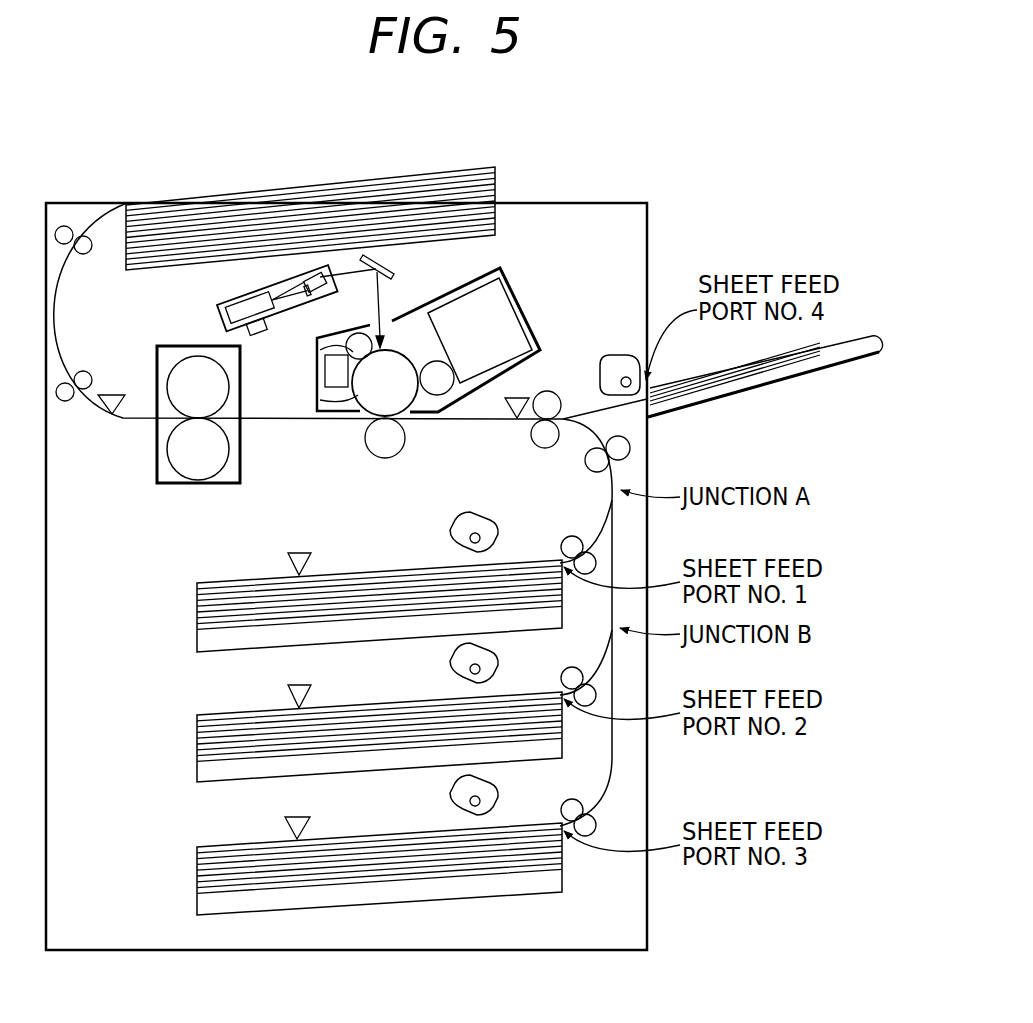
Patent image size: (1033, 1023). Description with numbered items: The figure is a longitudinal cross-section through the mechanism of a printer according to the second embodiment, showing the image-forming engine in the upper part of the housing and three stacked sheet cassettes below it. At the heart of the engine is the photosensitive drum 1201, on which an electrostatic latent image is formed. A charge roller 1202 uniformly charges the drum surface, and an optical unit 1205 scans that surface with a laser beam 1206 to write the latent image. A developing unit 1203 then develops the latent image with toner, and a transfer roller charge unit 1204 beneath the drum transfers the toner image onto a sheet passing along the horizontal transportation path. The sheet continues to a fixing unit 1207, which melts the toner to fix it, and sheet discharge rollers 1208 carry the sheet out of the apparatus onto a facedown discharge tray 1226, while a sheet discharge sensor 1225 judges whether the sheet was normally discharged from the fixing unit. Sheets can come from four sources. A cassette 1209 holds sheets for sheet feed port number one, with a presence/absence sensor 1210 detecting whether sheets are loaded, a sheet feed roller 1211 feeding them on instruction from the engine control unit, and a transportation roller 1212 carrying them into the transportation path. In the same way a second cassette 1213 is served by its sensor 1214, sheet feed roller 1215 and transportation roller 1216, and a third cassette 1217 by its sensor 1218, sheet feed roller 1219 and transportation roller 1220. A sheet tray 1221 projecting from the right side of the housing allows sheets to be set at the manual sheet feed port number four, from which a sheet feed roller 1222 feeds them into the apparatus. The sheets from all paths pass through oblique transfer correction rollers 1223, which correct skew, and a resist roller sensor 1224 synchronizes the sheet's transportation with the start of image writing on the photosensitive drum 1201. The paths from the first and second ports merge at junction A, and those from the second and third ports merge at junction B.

The photosensitive drum 1201 is at (350, 396).
The charge roller 1202 is at (317, 355).
The developing unit 1203 is at (517, 297).
The transfer roller charge unit 1204 is at (385, 458).
The optical unit 1205 is at (222, 302).
The laser beam 1206 is at (382, 305).
The fixing unit 1207 is at (160, 485).
The sheet discharge rollers 1208 is at (88, 255).
The cassette (No. 1) 1209 is at (197, 645).
The cassette No. 1 sheet presence/absence sensor 1210 is at (288, 558).
The sheet feed roller (No. 1) 1211 is at (450, 530).
The transportation roller (No. 1) 1212 is at (582, 522).
The cassette (No. 2) 1213 is at (197, 778).
The cassette No. 2 sheet presence/absence sensor 1214 is at (288, 690).
The sheet feed roller (No. 2) 1215 is at (450, 662).
The transportation roller (No. 2) 1216 is at (574, 668).
The cassette (No. 3) 1217 is at (197, 905).
The cassette No. 3 sheet presence/absence sensor 1218 is at (286, 825).
The sheet feed roller (No. 3) 1219 is at (450, 795).
The transportation roller (No. 3) 1220 is at (582, 784).
The sheet tray 1221 is at (842, 367).
The sheet feed roller (No. 4) 1222 is at (622, 357).
The oblique transfer correction rollers 1223 is at (577, 380).
The resist roller sensor 1224 is at (520, 397).
The sheet discharge sensor 1225 is at (117, 395).
The facedown discharge tray 1226 is at (460, 168).